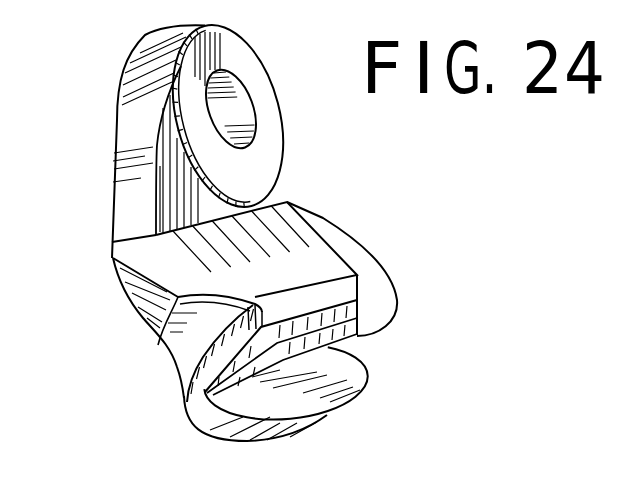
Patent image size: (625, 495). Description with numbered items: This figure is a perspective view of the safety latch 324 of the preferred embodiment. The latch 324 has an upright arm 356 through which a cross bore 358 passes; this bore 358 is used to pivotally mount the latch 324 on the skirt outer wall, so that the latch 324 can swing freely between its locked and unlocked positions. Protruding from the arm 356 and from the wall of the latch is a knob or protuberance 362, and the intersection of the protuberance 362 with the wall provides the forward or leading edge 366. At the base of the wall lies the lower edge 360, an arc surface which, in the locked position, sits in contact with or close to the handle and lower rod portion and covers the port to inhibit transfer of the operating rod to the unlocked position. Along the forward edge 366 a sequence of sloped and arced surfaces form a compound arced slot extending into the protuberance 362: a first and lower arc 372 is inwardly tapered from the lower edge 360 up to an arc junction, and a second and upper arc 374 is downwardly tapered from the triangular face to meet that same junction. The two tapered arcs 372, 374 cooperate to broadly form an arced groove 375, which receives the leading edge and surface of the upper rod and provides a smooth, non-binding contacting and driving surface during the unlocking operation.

The safety latch 324 is at (64, 180).
The upright arm 356 is at (118, 138).
The cross bore 358 is at (233, 108).
The forward edge 366 is at (112, 259).
The protuberance 362 is at (162, 268).
The first and lower arc 372 is at (183, 373).
The second and upper arc 374 is at (170, 340).
The arced groove 375 is at (162, 374).
The lower edge 360 is at (327, 416).